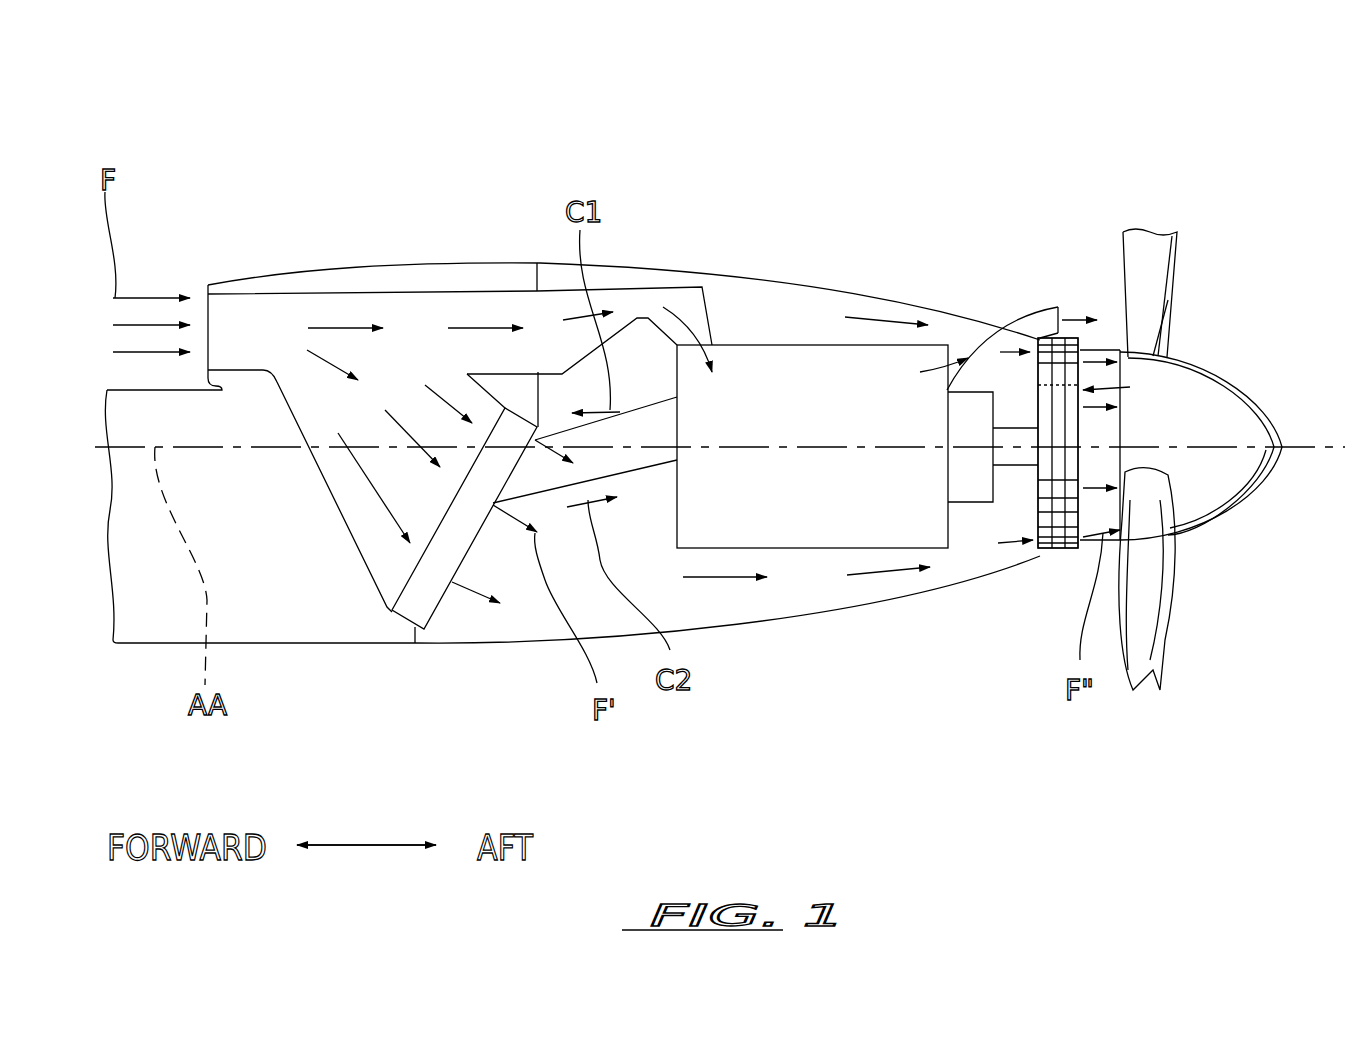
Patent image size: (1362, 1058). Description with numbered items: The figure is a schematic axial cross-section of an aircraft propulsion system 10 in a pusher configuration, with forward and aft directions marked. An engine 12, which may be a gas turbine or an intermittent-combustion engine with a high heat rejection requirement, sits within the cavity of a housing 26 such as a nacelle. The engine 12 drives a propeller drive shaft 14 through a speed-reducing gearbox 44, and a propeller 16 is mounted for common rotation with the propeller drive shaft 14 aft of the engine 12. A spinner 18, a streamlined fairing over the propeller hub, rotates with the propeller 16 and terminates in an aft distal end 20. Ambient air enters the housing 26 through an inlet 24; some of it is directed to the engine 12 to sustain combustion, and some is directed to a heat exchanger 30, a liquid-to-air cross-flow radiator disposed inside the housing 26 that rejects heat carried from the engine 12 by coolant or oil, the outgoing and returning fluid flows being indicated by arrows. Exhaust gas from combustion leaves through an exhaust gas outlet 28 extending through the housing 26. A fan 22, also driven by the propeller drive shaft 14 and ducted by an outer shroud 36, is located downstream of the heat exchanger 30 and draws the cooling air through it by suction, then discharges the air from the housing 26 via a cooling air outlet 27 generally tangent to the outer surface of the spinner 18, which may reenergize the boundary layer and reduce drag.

The aircraft propulsion system 10 is at (698, 128).
The engine 12 is at (813, 550).
The propeller drive shaft 14 is at (1018, 427).
The propeller 16 is at (1147, 218).
The spinner 18 is at (1230, 382).
The aft distal end 20 is at (1282, 447).
The fan 22 is at (1057, 525).
The outer shroud 36 is at (1058, 443).
The inlet 24 is at (208, 285).
The housing 26 is at (425, 263).
The cooling air outlet 27 is at (1130, 387).
The exhaust gas outlet 28 is at (1005, 330).
The heat exchanger 30 is at (425, 622).
The gearbox 44 is at (975, 505).